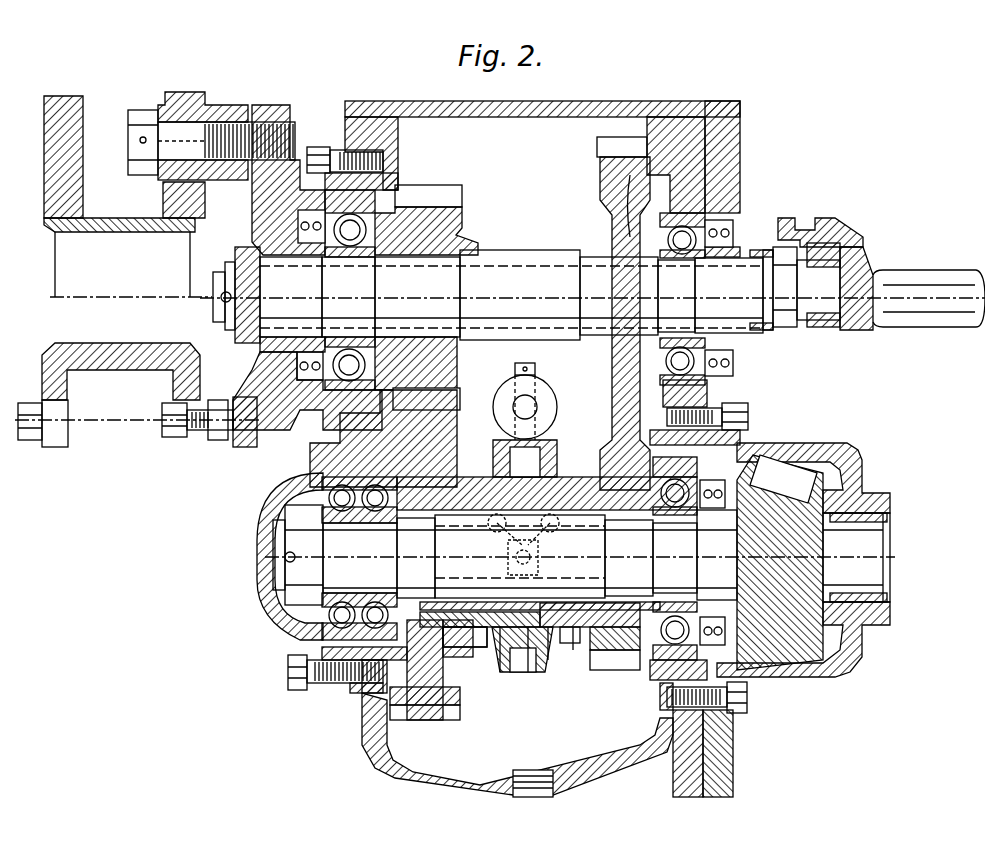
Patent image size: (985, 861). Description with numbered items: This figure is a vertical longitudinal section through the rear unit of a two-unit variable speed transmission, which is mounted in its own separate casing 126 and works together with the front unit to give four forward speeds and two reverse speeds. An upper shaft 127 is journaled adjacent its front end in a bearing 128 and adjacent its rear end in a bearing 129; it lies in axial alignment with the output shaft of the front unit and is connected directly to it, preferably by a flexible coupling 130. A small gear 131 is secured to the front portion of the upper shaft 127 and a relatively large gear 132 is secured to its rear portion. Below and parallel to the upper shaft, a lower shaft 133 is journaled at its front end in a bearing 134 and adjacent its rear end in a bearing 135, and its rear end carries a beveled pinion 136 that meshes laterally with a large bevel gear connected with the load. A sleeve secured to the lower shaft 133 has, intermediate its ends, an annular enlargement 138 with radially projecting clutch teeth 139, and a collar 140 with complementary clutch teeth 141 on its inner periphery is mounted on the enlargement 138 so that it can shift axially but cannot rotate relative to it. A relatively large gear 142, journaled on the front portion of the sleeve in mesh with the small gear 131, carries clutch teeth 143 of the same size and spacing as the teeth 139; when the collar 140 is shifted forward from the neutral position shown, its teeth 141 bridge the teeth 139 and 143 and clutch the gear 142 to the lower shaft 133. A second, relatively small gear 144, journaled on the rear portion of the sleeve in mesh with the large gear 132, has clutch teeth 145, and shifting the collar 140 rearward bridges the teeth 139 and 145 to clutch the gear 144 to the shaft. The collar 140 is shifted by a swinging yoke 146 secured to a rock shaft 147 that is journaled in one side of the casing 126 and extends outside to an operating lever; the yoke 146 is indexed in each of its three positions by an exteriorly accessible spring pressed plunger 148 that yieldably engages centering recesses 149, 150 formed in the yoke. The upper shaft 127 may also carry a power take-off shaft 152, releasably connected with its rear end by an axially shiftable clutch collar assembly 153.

The casing 126 is at (318, 146).
The upper shaft 127 is at (592, 293).
The bearing 128 is at (352, 258).
The bearing 129 is at (684, 256).
The flexible coupling 130 is at (225, 100).
The small gear 131 is at (424, 192).
The large gear 132 is at (600, 143).
The lower shaft 133 is at (422, 530).
The bearing 134 is at (372, 508).
The bearing 135 is at (677, 506).
The beveled pinion 136 is at (777, 467).
The annular enlargement 138 is at (547, 660).
The clutch teeth 139 is at (528, 672).
The collar 140 is at (510, 678).
The clutch teeth 141 is at (492, 645).
The large gear 142 is at (443, 720).
The clutch teeth 143 is at (475, 634).
The small gear 144 is at (628, 668).
The clutch teeth 145 is at (575, 650).
The swinging yoke 146 is at (546, 442).
The rock shaft 147 is at (542, 402).
The spring pressed plunger 148 is at (500, 543).
The centering recess 149 is at (545, 545).
The centering recess 150 is at (490, 526).
The power take-off shaft 152 is at (912, 282).
The clutch collar assembly 153 is at (836, 228).